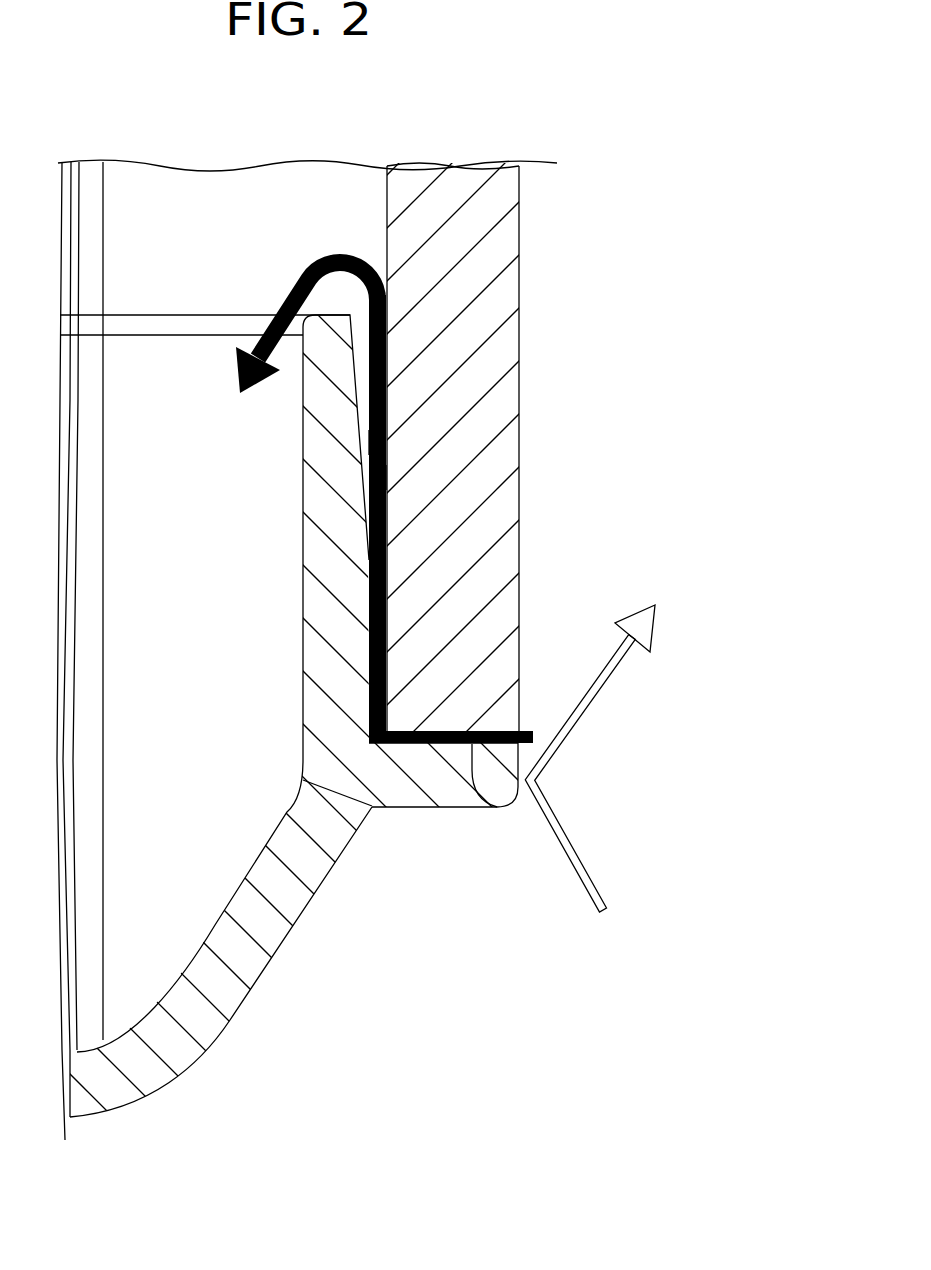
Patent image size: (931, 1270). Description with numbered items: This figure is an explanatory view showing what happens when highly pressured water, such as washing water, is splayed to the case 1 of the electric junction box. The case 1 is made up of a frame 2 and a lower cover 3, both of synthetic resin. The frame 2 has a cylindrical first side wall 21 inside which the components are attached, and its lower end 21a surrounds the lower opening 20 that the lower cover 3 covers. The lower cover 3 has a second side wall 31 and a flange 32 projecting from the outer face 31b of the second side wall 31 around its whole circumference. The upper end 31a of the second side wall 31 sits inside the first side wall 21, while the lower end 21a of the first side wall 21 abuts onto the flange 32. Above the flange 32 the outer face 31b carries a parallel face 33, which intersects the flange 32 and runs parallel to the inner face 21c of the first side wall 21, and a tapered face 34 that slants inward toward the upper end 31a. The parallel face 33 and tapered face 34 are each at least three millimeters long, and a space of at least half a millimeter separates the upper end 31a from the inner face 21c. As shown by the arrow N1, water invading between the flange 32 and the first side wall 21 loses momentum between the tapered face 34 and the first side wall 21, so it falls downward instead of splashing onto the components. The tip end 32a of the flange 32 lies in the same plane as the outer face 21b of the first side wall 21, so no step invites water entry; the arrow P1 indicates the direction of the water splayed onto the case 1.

The case 1 is at (611, 87).
The frame 2 is at (535, 225).
The lower cover 3 is at (292, 948).
The opening 20 is at (390, 753).
The first side wall 21 is at (518, 330).
The lower end 21a is at (490, 750).
The outer face 21b is at (519, 369).
The inner face 21c is at (387, 185).
The second side wall 31 is at (445, 583).
The upper end 31a is at (337, 313).
The outer face 31b is at (390, 570).
The flange 32 is at (442, 790).
The tip end 32a is at (520, 753).
The parallel face 33 is at (390, 597).
The tapered face 34 is at (365, 442).
The arrow N1 is at (390, 477).
The insertion direction P1 is at (604, 672).